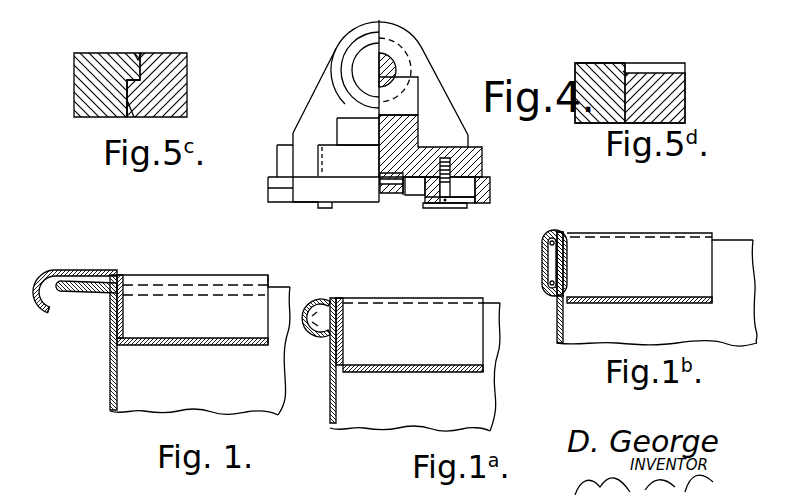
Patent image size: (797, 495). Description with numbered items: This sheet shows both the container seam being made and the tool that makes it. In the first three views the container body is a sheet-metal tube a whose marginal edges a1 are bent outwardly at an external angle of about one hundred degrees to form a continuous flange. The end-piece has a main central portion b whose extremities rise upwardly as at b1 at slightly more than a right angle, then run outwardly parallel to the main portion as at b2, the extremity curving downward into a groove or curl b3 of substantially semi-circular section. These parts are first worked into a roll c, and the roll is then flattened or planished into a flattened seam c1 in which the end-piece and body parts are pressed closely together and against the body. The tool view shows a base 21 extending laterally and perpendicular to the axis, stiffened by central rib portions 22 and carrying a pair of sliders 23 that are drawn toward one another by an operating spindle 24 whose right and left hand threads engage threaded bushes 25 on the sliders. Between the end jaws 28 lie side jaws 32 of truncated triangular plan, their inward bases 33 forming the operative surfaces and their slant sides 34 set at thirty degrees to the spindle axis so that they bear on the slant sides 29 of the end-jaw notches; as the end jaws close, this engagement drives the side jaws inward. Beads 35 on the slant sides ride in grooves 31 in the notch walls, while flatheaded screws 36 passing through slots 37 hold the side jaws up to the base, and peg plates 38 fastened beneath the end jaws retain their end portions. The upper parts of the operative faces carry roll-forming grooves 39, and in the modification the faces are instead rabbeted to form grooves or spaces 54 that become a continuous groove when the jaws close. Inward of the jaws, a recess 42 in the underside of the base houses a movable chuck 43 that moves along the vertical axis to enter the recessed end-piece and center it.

In FIG. 4, the base 21 is at (328, 167).
In FIG. 4, the central rib portions 22 is at (345, 133).
In FIG. 4, the sliders 23 is at (380, 111).
In FIG. 4, the operating spindle 24 is at (374, 68).
In FIG. 4, the threaded bushes 25 is at (372, 36).
In FIG. 5C, the end jaws 28 is at (177, 100).
In FIG. 5C, the slant sides of the notches 29 is at (130, 103).
In FIG. 5C, the grooves 31 is at (137, 71).
In FIG. 5C, the side jaws 32 is at (95, 95).
In FIG. 4, the side jaws 32 is at (440, 199).
In FIG. 4, the bases of the triangles 33 is at (434, 196).
In FIG. 5C, the slant sides 34 is at (125, 95).
In FIG. 4, the slant sides 34 is at (277, 194).
In FIG. 5C, the beads 35 is at (139, 68).
In FIG. 4, the beads 35 is at (285, 180).
In FIG. 4, the flatheaded screws 36 is at (453, 160).
In FIG. 4, the slots 37 is at (472, 183).
In FIG. 4, the peg plates 38 is at (322, 208).
In FIG. 4, the roll-forming grooves 39 is at (422, 182).
In FIG. 4, the recess 42 is at (382, 181).
In FIG. 4, the chuck 43 is at (385, 187).
In FIG. 5D, the grooves or spaces 54 is at (627, 75).
In FIG. 1, the tube a is at (110, 366).
In FIG. 1A, the tube a is at (330, 392).
In FIG. 1B, the tube a is at (557, 326).
In FIG. 1, the marginal edges a1 is at (106, 295).
In FIG. 1, the main central portion b is at (232, 344).
In FIG. 1A, the main central portion b is at (447, 368).
In FIG. 1B, the main central portion b is at (650, 304).
In FIG. 1, the upwardly extending extremities b1 is at (125, 312).
In FIG. 1, the outwardly extending portion b2 is at (84, 273).
In FIG. 1, the groove or curl b3 is at (42, 314).
In FIG. 1A, the roll c is at (320, 318).
In FIG. 1B, the flattened seam c1 is at (548, 253).